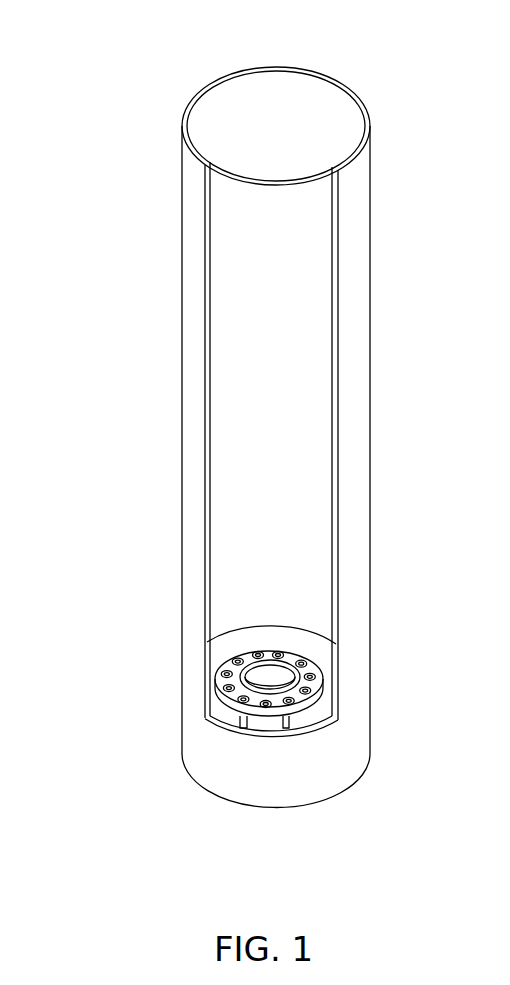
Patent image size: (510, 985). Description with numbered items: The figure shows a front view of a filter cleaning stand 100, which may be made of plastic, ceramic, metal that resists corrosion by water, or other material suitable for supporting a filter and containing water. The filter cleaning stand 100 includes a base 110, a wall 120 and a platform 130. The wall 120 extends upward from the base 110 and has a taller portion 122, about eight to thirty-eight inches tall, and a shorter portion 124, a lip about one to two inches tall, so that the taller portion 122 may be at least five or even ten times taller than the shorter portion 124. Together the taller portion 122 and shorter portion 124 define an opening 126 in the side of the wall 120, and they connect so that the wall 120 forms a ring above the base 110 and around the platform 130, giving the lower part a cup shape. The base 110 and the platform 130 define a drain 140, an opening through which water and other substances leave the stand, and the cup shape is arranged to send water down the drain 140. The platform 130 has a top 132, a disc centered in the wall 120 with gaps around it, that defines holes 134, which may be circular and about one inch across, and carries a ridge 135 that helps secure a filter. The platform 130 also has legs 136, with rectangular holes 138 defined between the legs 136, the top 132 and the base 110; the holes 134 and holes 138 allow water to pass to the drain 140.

The filter cleaning stand 100 is at (147, 52).
The base 110 is at (216, 752).
The wall 120 is at (191, 177).
The taller portion 122 is at (207, 237).
The shorter portion 124 is at (320, 730).
The opening 126 is at (234, 283).
The platform 130 is at (240, 657).
The top 132 is at (210, 692).
The holes 134 is at (222, 677).
The ridge 135 is at (278, 650).
The legs 136 is at (312, 708).
The holes 138 is at (278, 722).
The drain 140 is at (290, 650).